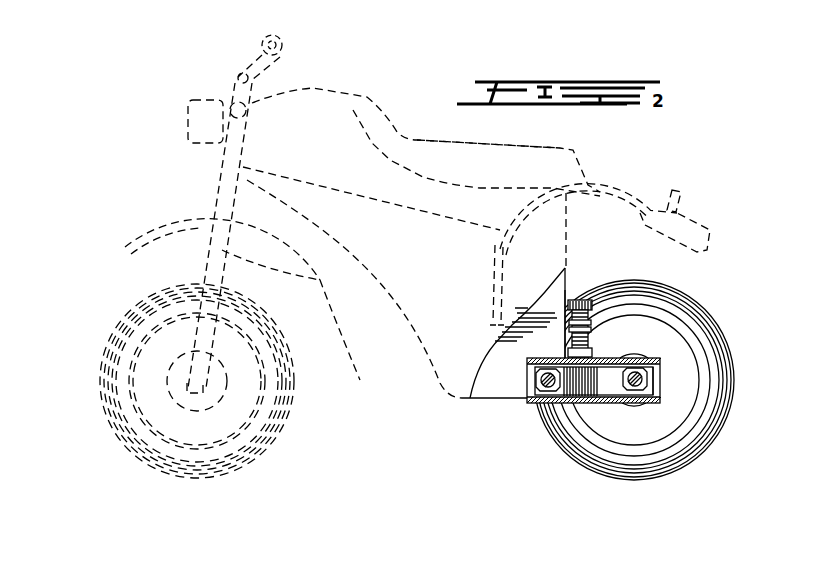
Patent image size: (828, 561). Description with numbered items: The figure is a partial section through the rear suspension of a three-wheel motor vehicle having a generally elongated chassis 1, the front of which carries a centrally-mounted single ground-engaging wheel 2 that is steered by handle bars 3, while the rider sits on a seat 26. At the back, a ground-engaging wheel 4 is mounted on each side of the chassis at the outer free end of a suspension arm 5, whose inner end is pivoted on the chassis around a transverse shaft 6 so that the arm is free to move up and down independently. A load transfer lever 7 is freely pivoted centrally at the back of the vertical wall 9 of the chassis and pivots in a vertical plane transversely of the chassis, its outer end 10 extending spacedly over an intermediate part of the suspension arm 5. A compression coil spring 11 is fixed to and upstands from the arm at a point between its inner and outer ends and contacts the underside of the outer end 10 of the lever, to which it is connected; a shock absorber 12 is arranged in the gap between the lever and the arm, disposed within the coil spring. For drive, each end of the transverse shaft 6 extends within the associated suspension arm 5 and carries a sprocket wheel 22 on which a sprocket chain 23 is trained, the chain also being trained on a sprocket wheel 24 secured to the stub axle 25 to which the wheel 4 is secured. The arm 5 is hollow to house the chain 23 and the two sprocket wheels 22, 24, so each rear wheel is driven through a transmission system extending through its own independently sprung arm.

The chassis 1 is at (474, 406).
The ground-engaging wheel 2 is at (266, 430).
The handle bars 3 is at (283, 36).
The ground-engaging wheel 4 is at (690, 437).
The suspension arm 5 is at (583, 400).
The transverse shaft 6 is at (547, 388).
The load transfer lever 7 is at (582, 300).
The vertical wall 9 is at (584, 297).
The outer end 10 is at (587, 340).
The compression coil spring 11 is at (593, 354).
The shock absorber 12 is at (589, 347).
The sprocket wheel 22 is at (563, 393).
The sprocket chain 23 is at (607, 392).
The sprocket wheel 24 is at (632, 392).
The stub axle 25 is at (642, 374).
The seat 26 is at (414, 142).